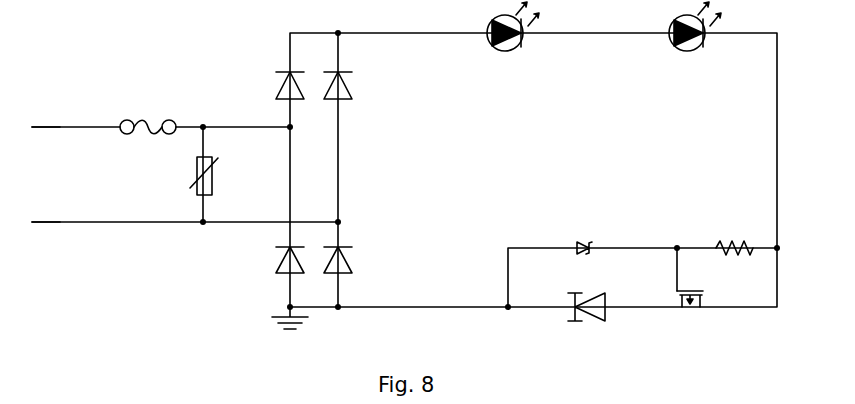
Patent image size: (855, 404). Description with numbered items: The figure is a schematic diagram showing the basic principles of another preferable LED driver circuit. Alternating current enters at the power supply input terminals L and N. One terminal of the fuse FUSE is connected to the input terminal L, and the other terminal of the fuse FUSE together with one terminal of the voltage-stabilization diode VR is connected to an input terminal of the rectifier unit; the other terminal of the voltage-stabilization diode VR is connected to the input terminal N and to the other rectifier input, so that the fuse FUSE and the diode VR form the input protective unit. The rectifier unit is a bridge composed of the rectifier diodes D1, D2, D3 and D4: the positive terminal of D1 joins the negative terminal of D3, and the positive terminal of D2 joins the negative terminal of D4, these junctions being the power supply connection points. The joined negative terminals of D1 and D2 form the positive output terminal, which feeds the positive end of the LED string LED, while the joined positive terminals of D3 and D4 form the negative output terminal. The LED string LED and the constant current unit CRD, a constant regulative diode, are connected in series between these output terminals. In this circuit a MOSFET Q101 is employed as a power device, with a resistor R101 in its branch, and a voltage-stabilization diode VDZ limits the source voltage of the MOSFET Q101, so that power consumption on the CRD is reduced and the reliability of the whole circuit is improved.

The power supply input terminal L is at (36, 128).
The power supply input terminal N is at (36, 223).
The fuse FUSE is at (148, 140).
The voltage-stabilization diode VR is at (216, 177).
The rectifier diode D1 is at (281, 77).
The rectifier diode D2 is at (331, 77).
The rectifier diode D3 is at (279, 251).
The rectifier diode D4 is at (331, 251).
The LED string LED is at (604, 38).
The voltage-stabilization diode VDZ is at (585, 239).
The constant current unit CRD is at (586, 317).
The resistor R101 is at (732, 238).
The MOSFET Q101 is at (688, 316).